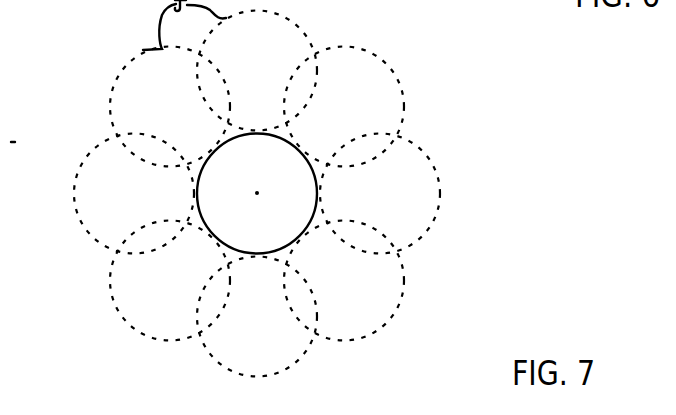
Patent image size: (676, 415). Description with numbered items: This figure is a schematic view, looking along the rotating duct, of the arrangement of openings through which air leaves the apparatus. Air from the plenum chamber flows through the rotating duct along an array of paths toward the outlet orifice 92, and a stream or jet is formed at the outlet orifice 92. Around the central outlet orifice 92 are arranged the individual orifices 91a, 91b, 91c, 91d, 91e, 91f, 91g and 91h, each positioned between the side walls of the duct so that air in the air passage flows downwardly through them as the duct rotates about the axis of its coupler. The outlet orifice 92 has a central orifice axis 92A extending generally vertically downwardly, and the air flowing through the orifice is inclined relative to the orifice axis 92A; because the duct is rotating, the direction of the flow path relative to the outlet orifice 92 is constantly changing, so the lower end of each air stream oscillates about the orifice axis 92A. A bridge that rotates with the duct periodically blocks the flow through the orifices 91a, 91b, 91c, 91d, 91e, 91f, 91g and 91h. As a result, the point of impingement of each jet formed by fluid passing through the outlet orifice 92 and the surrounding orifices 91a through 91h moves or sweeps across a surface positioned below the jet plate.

The orifice 91a is at (171, 107).
The orifice 91b is at (255, 68).
The orifice 91c is at (342, 105).
The orifice 91d is at (378, 193).
The orifice 91e is at (342, 283).
The orifice 91f is at (257, 318).
The orifice 91g is at (173, 283).
The orifice 91h is at (135, 195).
The outlet orifice 92 is at (222, 194).
The orifice axis 92A is at (257, 193).